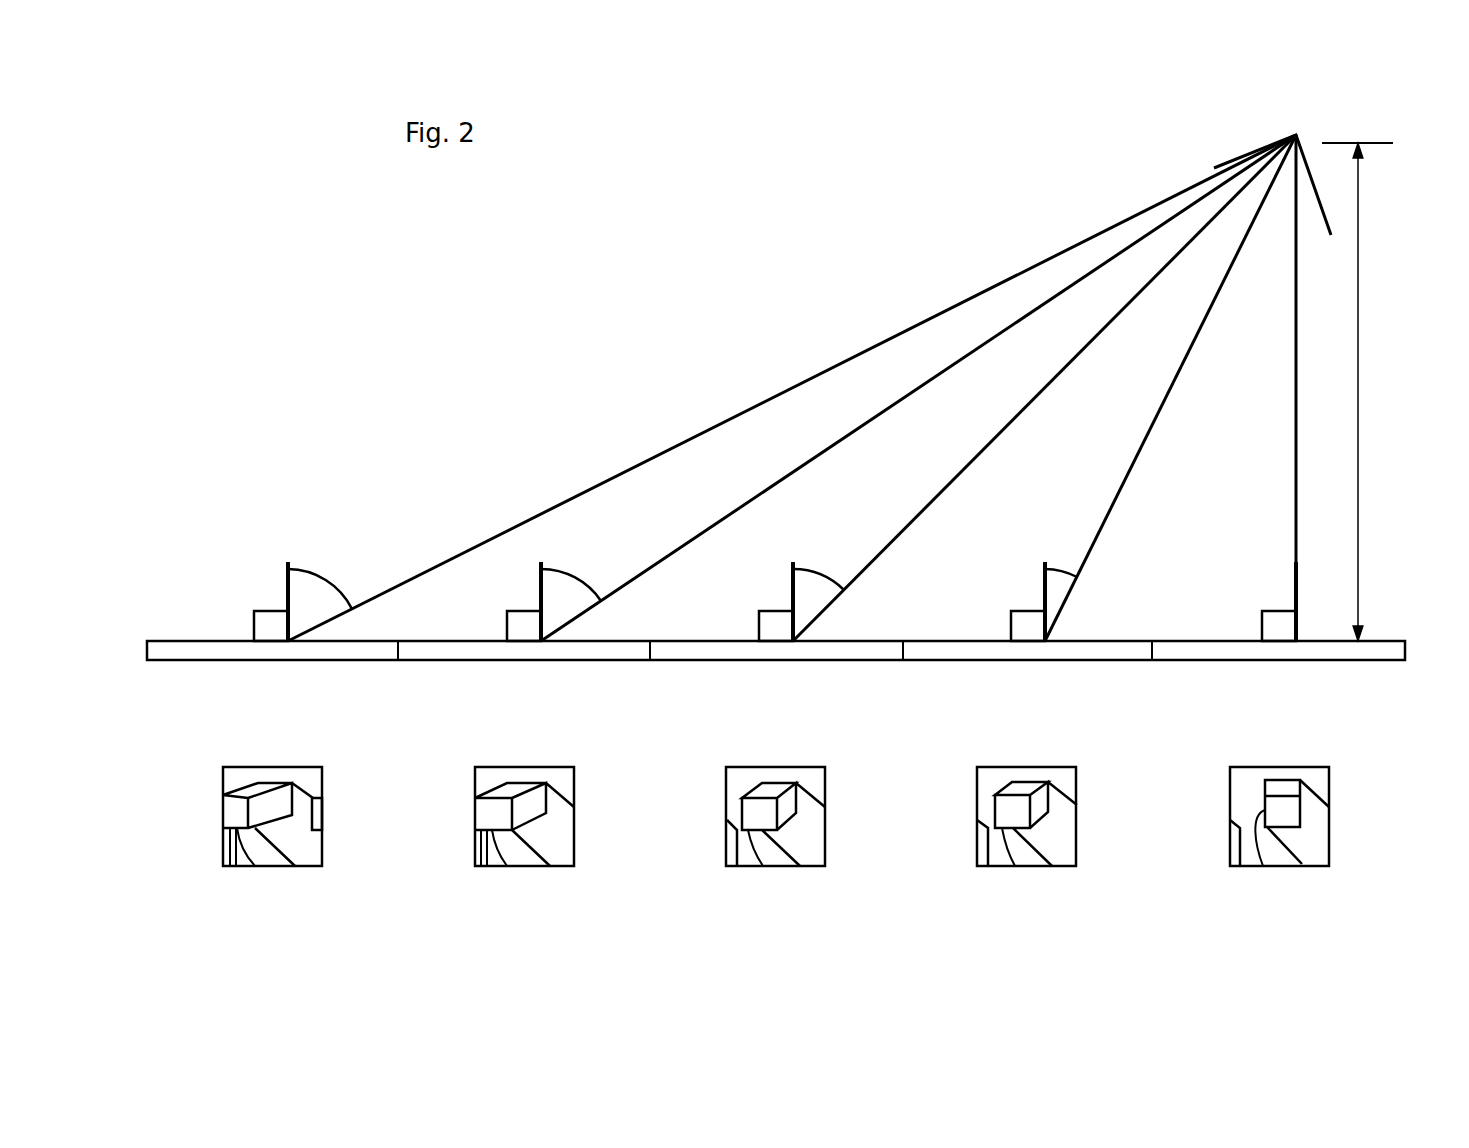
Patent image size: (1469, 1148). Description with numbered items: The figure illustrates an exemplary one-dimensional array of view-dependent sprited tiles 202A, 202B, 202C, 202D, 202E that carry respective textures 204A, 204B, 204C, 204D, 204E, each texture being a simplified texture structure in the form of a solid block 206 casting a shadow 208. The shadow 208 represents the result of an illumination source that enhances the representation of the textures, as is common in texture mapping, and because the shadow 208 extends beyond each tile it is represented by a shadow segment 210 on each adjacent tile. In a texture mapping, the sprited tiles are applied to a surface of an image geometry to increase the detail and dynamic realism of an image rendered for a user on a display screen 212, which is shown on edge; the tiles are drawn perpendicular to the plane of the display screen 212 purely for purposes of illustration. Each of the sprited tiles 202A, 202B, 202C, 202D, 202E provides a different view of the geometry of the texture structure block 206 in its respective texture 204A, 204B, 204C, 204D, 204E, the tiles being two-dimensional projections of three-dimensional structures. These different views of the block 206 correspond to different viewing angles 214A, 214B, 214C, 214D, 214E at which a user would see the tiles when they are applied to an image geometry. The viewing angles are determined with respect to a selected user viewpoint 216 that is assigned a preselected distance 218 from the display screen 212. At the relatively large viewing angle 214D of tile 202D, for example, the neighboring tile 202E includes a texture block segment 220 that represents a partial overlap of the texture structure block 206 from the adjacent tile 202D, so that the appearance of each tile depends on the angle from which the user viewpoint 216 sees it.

The sprited tile 202A is at (1240, 767).
The sprited tile 202B is at (987, 767).
The sprited tile 202C is at (736, 767).
The sprited tile 202D is at (485, 767).
The sprited tile 202E is at (233, 767).
The texture 204A is at (1337, 768).
The texture 204B is at (1084, 768).
The texture 204C is at (833, 768).
The texture 204D is at (582, 768).
The texture 204E is at (330, 768).
The solid block 206 is at (255, 866).
The shadow 208 is at (295, 841).
The shadow segment 210 is at (226, 858).
The display screen 212 is at (190, 641).
The viewing angle 214A is at (1294, 568).
The viewing angle 214B is at (1068, 573).
The viewing angle 214C is at (820, 574).
The viewing angle 214D is at (575, 590).
The viewing angle 214E is at (325, 590).
The user viewpoint 216 is at (1292, 132).
The preselected distance 218 is at (1359, 418).
The texture block segment 220 is at (322, 806).